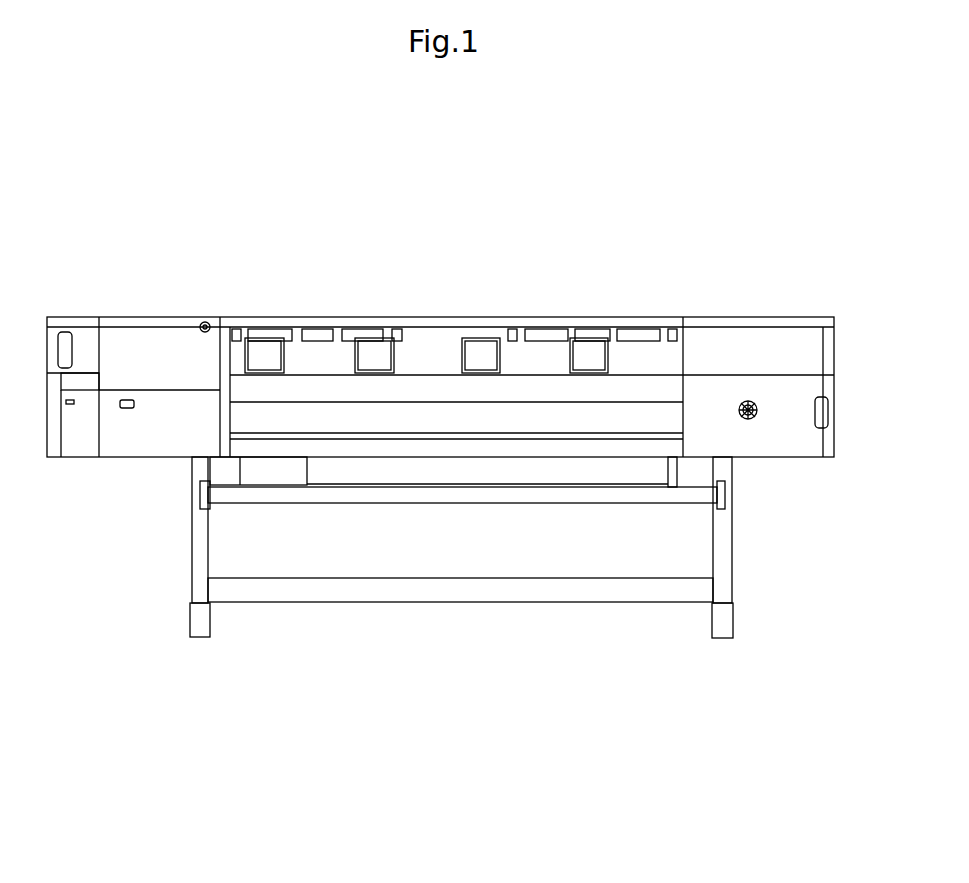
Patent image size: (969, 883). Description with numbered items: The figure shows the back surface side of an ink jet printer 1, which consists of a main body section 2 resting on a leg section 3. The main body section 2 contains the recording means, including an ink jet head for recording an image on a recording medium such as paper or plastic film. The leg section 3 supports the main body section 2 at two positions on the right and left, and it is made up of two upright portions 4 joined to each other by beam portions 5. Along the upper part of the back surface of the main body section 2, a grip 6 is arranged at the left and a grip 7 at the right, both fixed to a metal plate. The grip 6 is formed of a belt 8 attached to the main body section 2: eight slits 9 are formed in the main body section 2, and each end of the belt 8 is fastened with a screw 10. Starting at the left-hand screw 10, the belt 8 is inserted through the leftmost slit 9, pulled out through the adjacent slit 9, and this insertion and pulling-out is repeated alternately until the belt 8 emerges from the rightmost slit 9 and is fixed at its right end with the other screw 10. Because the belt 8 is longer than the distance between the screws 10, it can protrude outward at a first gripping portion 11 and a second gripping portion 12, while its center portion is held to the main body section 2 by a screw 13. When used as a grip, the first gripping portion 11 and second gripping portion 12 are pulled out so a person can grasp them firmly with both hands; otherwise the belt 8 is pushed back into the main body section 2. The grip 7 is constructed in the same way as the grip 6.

The ink jet printer 1 is at (545, 242).
The main body section 2 is at (768, 318).
The leg section 3 is at (760, 553).
The upright portion 4 is at (198, 563).
The beam portion 5 is at (527, 497).
The grip 6 is at (364, 325).
The grip 7 is at (646, 325).
The belt 8 is at (323, 330).
The slit 9 is at (242, 328).
The screw 10 is at (241, 340).
The first gripping portion 11 is at (276, 333).
The second gripping portion 12 is at (362, 337).
The screw 13 is at (323, 330).